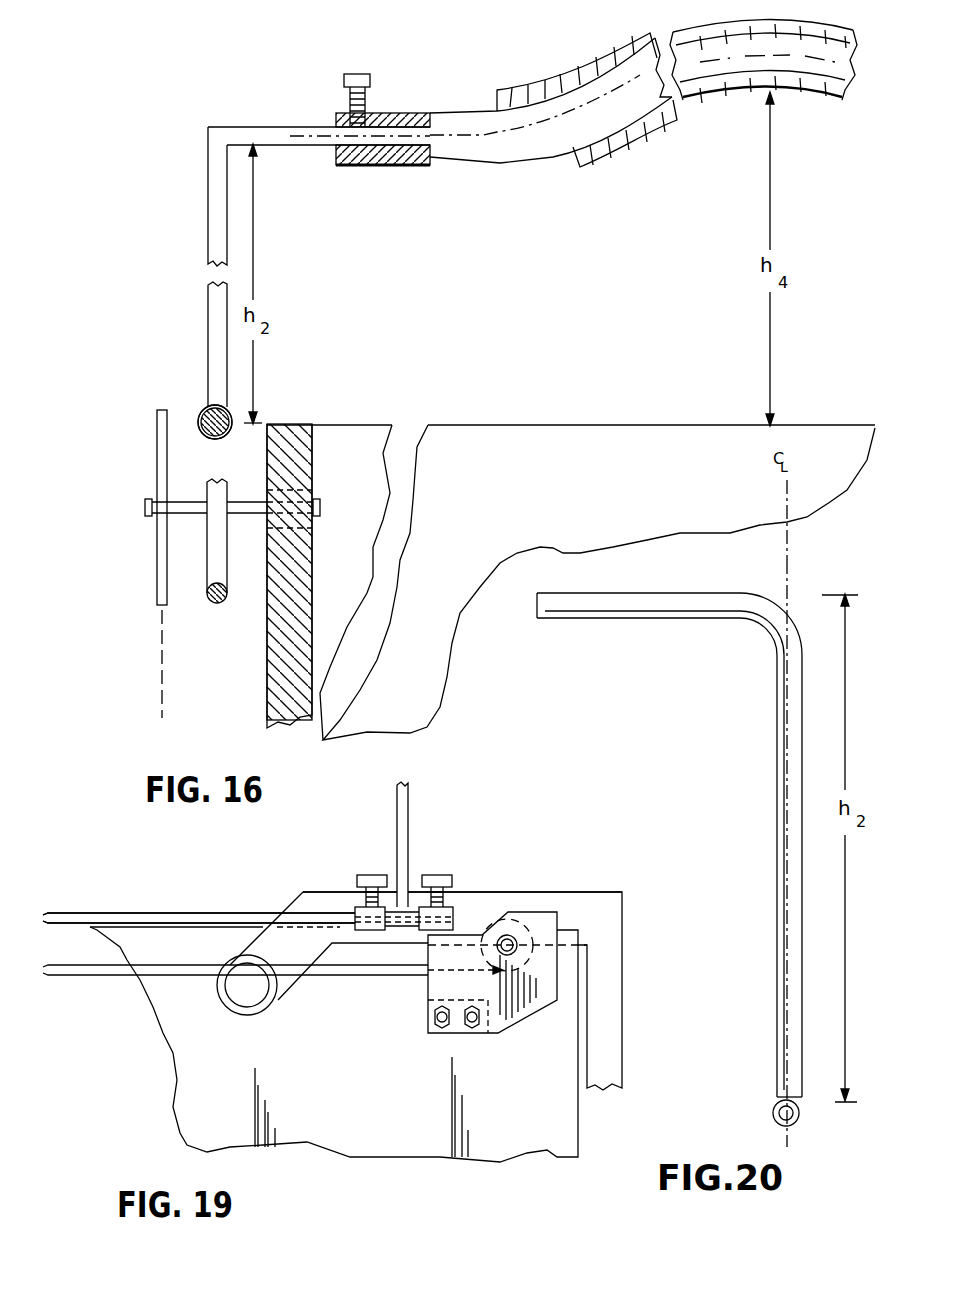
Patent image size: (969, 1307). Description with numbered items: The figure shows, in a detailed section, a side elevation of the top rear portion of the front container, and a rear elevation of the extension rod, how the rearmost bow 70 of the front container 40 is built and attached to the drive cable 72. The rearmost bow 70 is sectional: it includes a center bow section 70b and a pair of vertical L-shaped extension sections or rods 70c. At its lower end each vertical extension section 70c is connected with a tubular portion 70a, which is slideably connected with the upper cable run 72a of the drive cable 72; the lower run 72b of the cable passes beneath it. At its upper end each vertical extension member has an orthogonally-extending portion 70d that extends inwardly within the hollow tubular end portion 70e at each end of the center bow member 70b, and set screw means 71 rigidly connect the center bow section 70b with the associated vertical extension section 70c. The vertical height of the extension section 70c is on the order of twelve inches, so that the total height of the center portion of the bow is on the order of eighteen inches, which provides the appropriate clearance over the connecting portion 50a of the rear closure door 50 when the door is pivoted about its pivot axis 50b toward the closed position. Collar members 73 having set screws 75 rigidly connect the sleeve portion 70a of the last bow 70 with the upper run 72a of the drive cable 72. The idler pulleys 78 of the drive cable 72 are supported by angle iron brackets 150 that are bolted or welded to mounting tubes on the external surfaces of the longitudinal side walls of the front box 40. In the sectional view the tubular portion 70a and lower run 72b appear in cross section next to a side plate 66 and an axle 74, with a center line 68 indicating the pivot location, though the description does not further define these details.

In FIG. 16, the front container 40 is at (378, 420).
In FIG. 19, the front container 40 is at (418, 1103).
In FIG. 19, the rear closure door 50 is at (602, 982).
In FIG. 19, the connecting portion 50a is at (513, 903).
In FIG. 19, the pivot axis 50b is at (250, 990).
In FIG. 16, the plate 66 is at (157, 563).
In FIG. 16, the center line 68 is at (155, 672).
In FIG. 16, the rearmost bow 70 is at (442, 102).
In FIG. 20, the rearmost bow 70 is at (773, 1113).
In FIG. 16, the tubular portion 70a is at (205, 410).
In FIG. 16, the center bow section 70b is at (523, 140).
In FIG. 16, the vertical extension section 70c is at (213, 240).
In FIG. 19, the vertical extension section 70c is at (404, 816).
In FIG. 20, the vertical extension section 70c is at (778, 765).
In FIG. 16, the orthogonally-extending portion 70d is at (278, 138).
In FIG. 20, the orthogonally-extending portion 70d is at (627, 602).
In FIG. 16, the hollow tubular end portion 70e is at (368, 158).
In FIG. 16, the set screw means 71 is at (357, 72).
In FIG. 19, the drive cable 72 is at (134, 905).
In FIG. 16, the upper cable run 72a is at (190, 424).
In FIG. 19, the upper cable run 72a is at (198, 915).
In FIG. 16, the lower rod 72b is at (218, 604).
In FIG. 19, the lower rod 72b is at (195, 975).
In FIG. 19, the collar member 73 is at (428, 923).
In FIG. 16, the axle 74 is at (208, 575).
In FIG. 19, the set screw 75 is at (357, 875).
In FIG. 19, the idler pulley 78 is at (523, 942).
In FIG. 19, the angle iron bracket 150 is at (540, 1005).